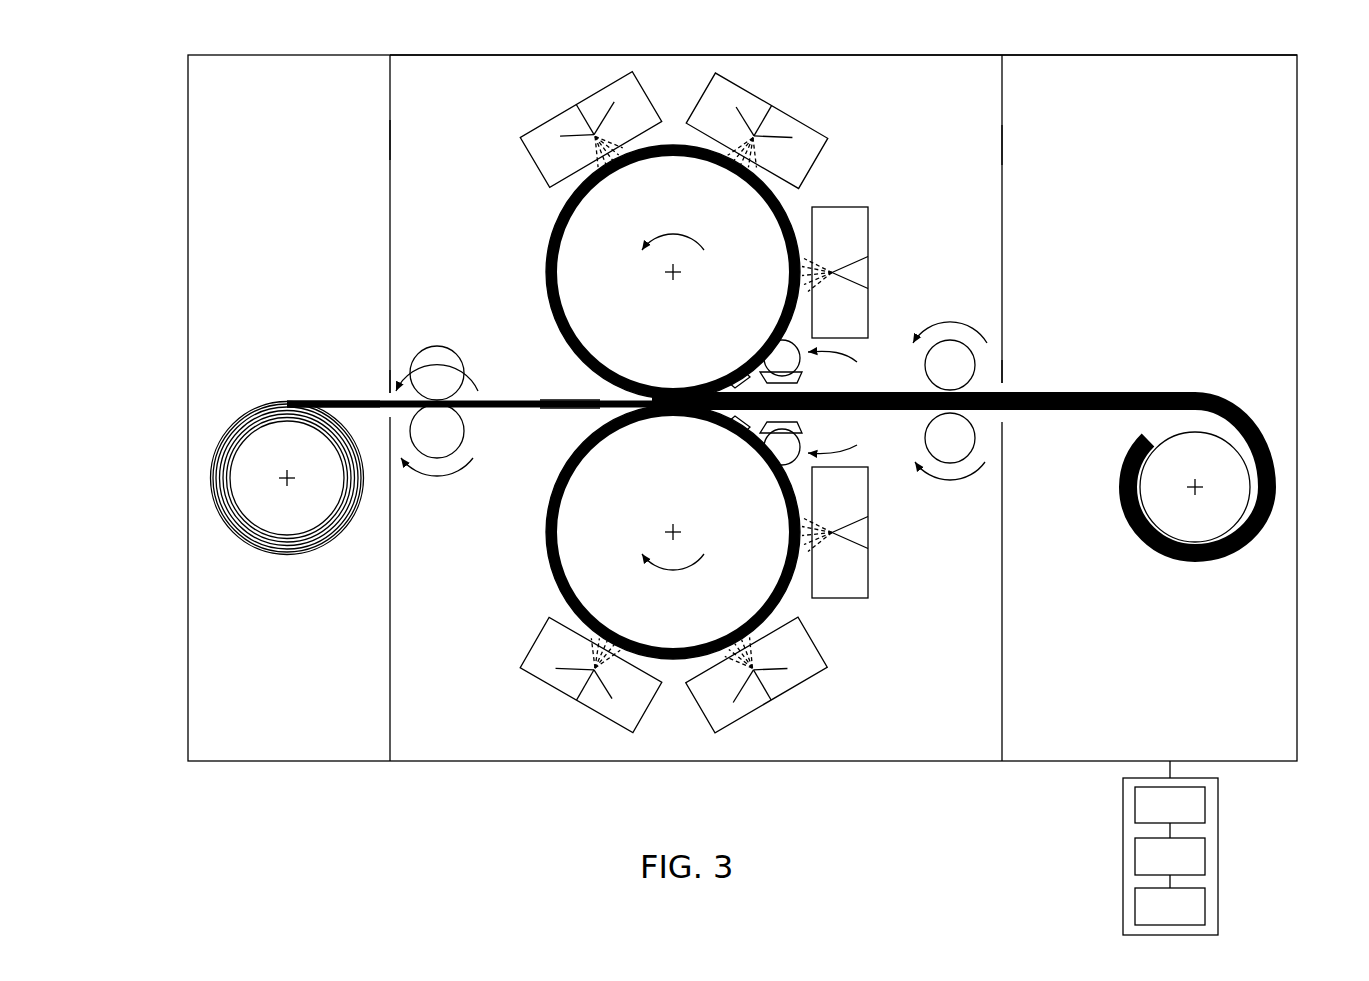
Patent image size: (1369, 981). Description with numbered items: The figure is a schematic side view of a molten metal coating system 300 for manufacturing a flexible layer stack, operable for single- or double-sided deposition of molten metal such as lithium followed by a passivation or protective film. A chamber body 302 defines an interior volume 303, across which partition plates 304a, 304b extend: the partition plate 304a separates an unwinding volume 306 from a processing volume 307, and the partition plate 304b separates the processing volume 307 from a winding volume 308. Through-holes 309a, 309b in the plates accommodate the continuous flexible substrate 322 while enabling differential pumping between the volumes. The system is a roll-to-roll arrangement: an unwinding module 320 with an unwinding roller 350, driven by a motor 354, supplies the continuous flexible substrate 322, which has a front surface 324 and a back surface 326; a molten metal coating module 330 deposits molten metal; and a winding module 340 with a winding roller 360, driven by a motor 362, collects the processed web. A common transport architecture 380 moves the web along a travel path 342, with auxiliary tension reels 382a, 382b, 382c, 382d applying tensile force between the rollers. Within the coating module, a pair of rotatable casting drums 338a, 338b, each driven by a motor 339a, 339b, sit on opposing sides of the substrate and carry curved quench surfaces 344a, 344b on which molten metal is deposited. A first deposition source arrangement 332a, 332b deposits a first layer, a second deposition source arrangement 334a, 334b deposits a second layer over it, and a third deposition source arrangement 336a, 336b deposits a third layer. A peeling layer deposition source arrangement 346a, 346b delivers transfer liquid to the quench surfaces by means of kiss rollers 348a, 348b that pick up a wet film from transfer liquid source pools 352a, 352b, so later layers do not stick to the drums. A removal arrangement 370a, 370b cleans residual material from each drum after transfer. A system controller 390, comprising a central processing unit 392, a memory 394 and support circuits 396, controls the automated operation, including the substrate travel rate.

The molten metal coating system 300 is at (150, 68).
The chamber body 302 is at (432, 55).
The interior volume 303 is at (461, 107).
The partition plate 304a is at (390, 140).
The partition plate 304b is at (1002, 145).
The unwinding volume 306 is at (258, 97).
The processing volume 307 is at (948, 97).
The winding volume 308 is at (1251, 97).
The through-hole 309a is at (390, 390).
The through-hole 309b is at (1004, 383).
The unwinding module 320 is at (280, 55).
The continuous flexible substrate 322 is at (287, 400).
The front surface 324 is at (568, 398).
The back surface 326 is at (568, 410).
The molten metal coating module 330 is at (904, 55).
The first deposition source arrangement 332a is at (868, 244).
The first deposition source arrangement 332b is at (868, 580).
The second deposition source arrangement 334a is at (802, 122).
The second deposition source arrangement 334b is at (813, 683).
The third deposition source arrangement 336a is at (543, 130).
The third deposition source arrangement 336b is at (606, 713).
The rotatable casting drum 338a is at (701, 199).
The rotatable casting drum 338b is at (699, 621).
The motor 339a is at (670, 277).
The motor 339b is at (672, 532).
The winding module 340 is at (1140, 55).
The travel path 342 is at (1062, 375).
The quench surface 344a is at (549, 228).
The quench surface 344b is at (546, 536).
The peeling layer deposition source arrangement 346a is at (860, 370).
The peeling layer deposition source arrangement 346b is at (860, 438).
The kiss roller 348a is at (782, 340).
The kiss roller 348b is at (783, 466).
The unwinding roller 350 is at (320, 548).
The transfer liquid source pool 352a is at (767, 352).
The transfer liquid source pool 352b is at (766, 448).
The motor 354 is at (287, 483).
The winding roller 360 is at (1177, 560).
The motor 362 is at (1198, 486).
The removal arrangement 370a is at (732, 378).
The removal arrangement 370b is at (732, 426).
The common transport architecture 380 is at (250, 395).
The auxiliary tension reel 382a is at (452, 374).
The auxiliary tension reel 382b is at (955, 352).
The auxiliary tension reel 382c is at (457, 433).
The auxiliary tension reel 382d is at (963, 437).
The system controller 390 is at (1218, 832).
The central processing unit 392 is at (1189, 817).
The memory 394 is at (1189, 868).
The support circuits 396 is at (1189, 918).